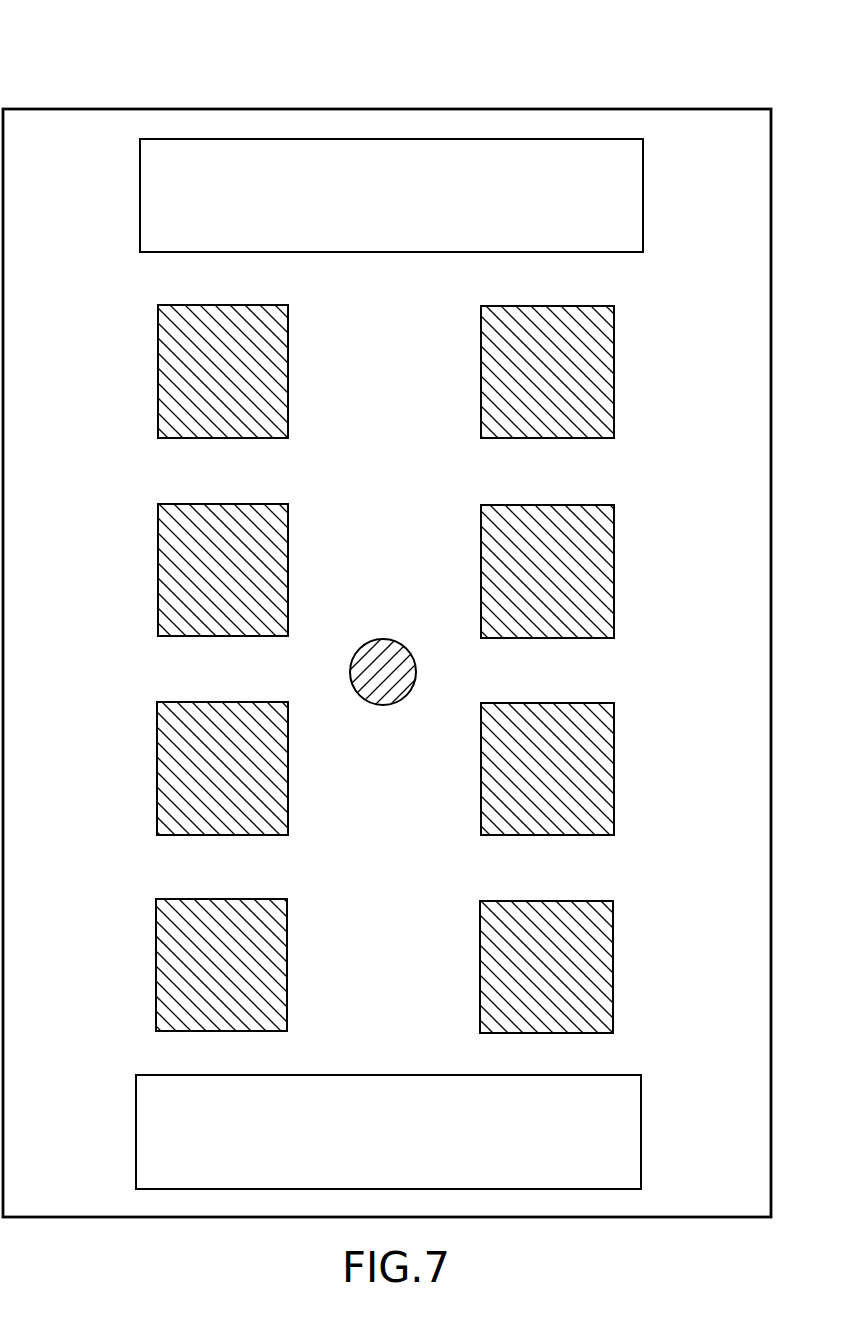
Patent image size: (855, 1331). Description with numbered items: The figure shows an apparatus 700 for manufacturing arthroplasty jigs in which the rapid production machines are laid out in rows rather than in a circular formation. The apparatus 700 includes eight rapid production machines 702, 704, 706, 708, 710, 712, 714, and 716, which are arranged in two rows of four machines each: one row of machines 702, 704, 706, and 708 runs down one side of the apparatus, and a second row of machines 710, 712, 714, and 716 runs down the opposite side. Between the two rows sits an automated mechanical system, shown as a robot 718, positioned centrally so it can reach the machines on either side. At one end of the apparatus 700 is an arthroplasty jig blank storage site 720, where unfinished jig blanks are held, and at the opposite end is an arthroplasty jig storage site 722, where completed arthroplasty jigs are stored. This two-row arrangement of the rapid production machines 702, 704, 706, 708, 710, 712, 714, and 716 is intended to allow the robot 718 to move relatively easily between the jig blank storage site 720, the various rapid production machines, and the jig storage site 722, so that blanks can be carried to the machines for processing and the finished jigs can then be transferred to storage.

The apparatus 700 is at (98, 101).
The rapid production machine 702 is at (167, 373).
The rapid production machine 704 is at (167, 577).
The rapid production machine 706 is at (167, 782).
The rapid production machine 708 is at (166, 980).
The rapid production machine 710 is at (600, 378).
The rapid production machine 712 is at (600, 570).
The rapid production machine 714 is at (600, 786).
The rapid production machine 716 is at (600, 978).
The robot 718 is at (385, 652).
The arthroplasty jig blank storage site 720 is at (641, 210).
The arthroplasty jig storage site 722 is at (641, 1136).